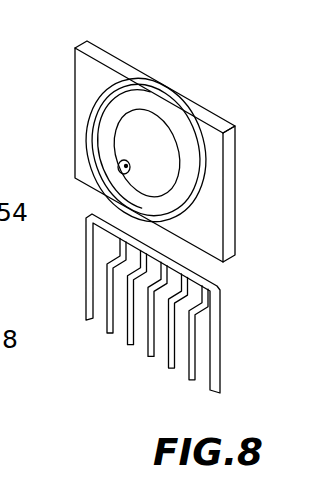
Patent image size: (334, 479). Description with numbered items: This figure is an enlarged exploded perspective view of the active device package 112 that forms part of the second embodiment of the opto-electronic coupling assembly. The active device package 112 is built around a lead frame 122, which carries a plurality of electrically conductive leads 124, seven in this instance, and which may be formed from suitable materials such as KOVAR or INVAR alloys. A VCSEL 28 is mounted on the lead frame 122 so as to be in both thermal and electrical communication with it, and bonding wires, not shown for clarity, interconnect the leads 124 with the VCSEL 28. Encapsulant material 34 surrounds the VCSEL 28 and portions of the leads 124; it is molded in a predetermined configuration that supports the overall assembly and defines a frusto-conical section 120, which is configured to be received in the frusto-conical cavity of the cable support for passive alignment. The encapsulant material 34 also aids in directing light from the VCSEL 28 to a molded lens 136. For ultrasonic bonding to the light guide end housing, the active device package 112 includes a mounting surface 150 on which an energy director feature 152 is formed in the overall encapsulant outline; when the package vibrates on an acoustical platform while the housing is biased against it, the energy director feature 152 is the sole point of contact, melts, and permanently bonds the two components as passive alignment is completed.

The active device package 112 is at (243, 95).
The mounting surface 150 is at (211, 222).
The encapsulant material 34 is at (75, 67).
The energy director feature 152 is at (200, 179).
The frusto-conical section 120 is at (152, 137).
The molded lens 136 is at (118, 167).
The lead frame 122 is at (214, 336).
The VCSEL 28 is at (118, 261).
The electrically conductive leads 124 is at (168, 369).